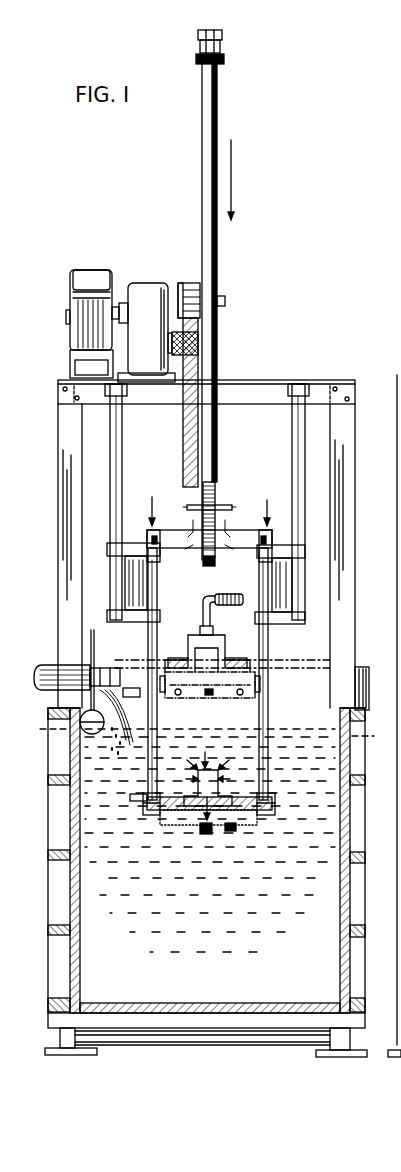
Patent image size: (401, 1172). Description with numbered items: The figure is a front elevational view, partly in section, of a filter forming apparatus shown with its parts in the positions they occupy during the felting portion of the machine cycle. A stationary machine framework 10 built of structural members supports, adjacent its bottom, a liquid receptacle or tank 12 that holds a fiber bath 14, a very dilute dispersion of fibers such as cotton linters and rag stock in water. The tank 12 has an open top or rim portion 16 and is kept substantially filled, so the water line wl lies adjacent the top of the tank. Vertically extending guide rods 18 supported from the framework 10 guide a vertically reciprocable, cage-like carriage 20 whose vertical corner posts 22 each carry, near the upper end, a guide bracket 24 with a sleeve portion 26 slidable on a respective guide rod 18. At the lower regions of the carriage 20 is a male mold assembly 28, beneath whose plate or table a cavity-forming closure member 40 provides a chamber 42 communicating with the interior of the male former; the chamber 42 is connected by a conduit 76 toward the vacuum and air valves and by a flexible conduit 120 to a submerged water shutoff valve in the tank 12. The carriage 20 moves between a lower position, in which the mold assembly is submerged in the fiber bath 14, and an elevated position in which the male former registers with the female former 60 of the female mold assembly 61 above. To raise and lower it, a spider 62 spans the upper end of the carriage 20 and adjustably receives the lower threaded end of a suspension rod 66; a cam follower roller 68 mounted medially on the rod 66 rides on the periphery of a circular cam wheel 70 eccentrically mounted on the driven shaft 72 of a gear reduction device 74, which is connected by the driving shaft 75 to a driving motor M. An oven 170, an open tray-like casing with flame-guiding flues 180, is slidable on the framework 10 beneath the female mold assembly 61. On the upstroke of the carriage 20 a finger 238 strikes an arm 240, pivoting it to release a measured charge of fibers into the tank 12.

The machine framework 10 is at (356, 506).
The tank 12 is at (347, 876).
The fiber bath 14 is at (287, 924).
The rim portion 16 is at (340, 710).
The guide rods 18 is at (122, 468).
The carriage 20 is at (193, 592).
The vertical corner posts 22 is at (163, 723).
The guide bracket 24 is at (130, 553).
The sleeve portion 26 is at (112, 573).
The male mold assembly 28 is at (203, 753).
The cavity-forming closure member 40 is at (165, 816).
The chamber 42 is at (180, 817).
The female former 60 is at (207, 653).
The female mold assembly 61 is at (189, 626).
The spider 62 is at (243, 540).
The suspension rod 66 is at (217, 116).
The cam follower roller 68 is at (190, 283).
The cam wheel 70 is at (203, 400).
The driven shaft 72 is at (199, 332).
The gear reduction device 74 is at (150, 292).
The driving shaft 75 is at (119, 302).
The conduit 76 is at (204, 834).
The flexible conduit 120 is at (232, 832).
The oven 170 is at (240, 688).
The flues 180 is at (180, 688).
The finger 238 is at (130, 797).
The arm 240 is at (125, 683).
The driving motor M is at (87, 265).
The water line wl is at (207, 733).